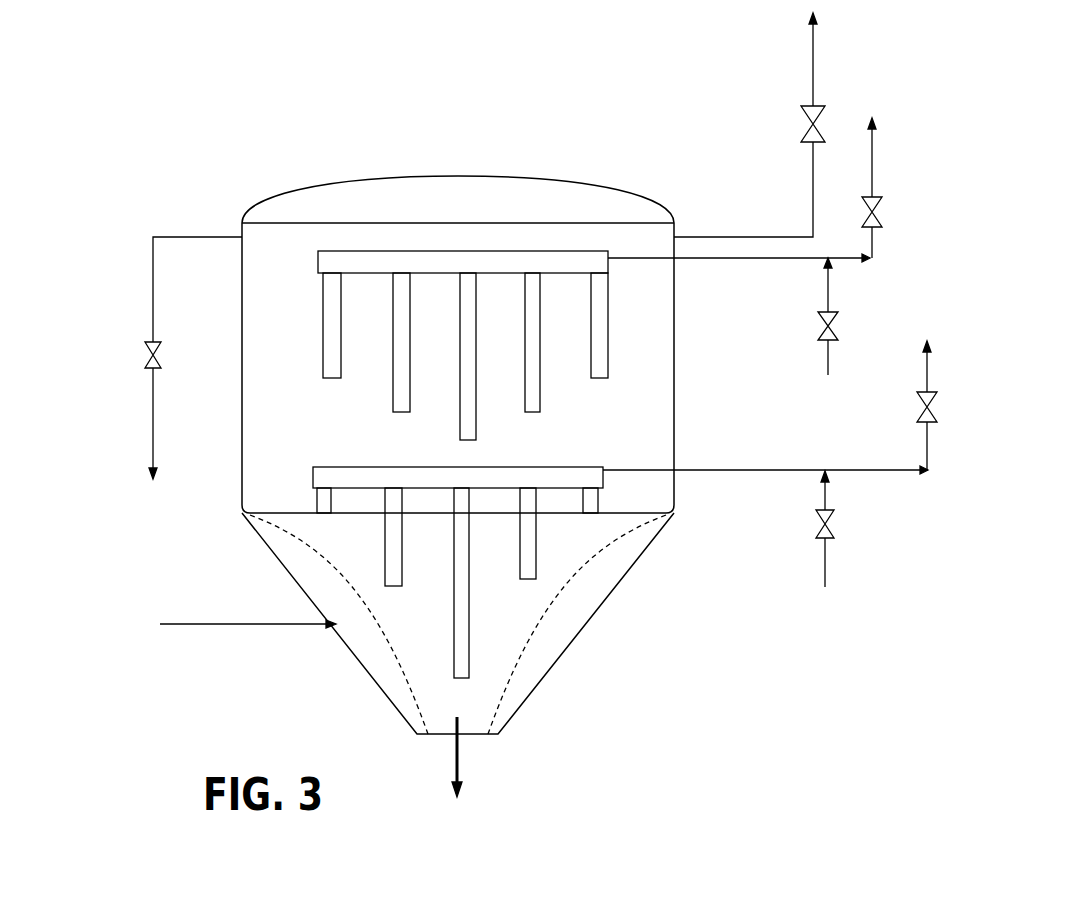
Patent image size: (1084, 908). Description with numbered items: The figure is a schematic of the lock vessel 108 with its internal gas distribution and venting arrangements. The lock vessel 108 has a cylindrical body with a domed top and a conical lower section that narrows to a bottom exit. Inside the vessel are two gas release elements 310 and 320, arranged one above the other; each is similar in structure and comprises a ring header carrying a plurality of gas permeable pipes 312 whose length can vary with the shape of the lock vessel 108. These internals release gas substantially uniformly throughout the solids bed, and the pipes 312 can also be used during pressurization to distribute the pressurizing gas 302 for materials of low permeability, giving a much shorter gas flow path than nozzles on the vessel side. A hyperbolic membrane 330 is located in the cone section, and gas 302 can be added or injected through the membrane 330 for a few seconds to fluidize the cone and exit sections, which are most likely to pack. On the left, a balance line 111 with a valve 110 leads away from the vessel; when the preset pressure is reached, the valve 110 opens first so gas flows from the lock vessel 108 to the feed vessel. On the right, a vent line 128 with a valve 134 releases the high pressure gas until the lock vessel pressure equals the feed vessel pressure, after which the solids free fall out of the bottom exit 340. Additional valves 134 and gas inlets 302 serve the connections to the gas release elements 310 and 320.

The lock vessel 108 is at (476, 153).
The gas release element 310 is at (460, 250).
The distributor legs 312 is at (323, 322).
The gas release element 320 is at (510, 467).
The hyperbolic membrane 330 is at (558, 590).
The bottom outlet 340 is at (484, 757).
The vent line 128 is at (813, 202).
The valve 134 is at (810, 125).
The pressurizing gas 302 is at (830, 342).
The balance line 111 is at (153, 268).
The valve 110 is at (150, 353).